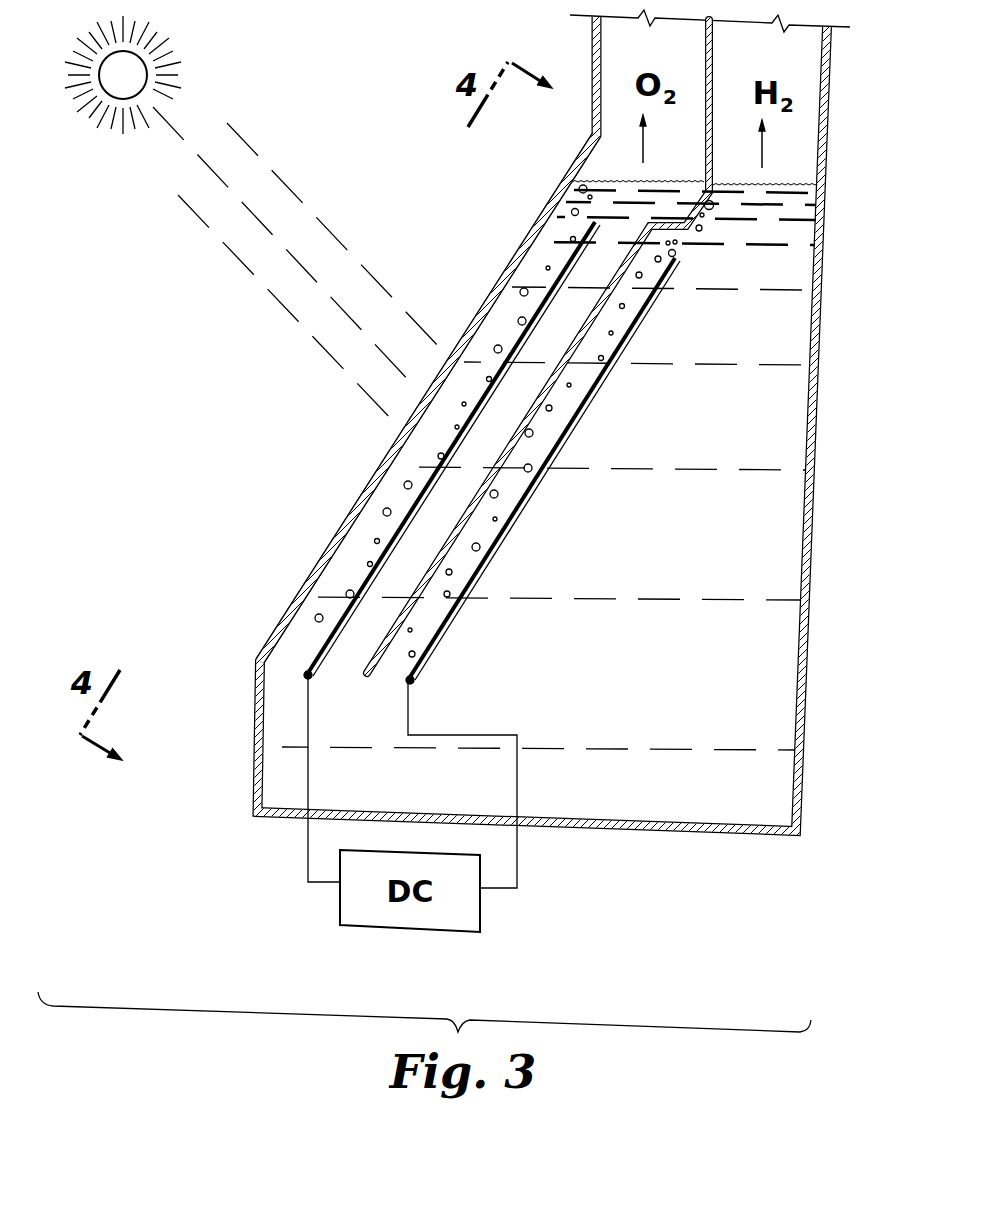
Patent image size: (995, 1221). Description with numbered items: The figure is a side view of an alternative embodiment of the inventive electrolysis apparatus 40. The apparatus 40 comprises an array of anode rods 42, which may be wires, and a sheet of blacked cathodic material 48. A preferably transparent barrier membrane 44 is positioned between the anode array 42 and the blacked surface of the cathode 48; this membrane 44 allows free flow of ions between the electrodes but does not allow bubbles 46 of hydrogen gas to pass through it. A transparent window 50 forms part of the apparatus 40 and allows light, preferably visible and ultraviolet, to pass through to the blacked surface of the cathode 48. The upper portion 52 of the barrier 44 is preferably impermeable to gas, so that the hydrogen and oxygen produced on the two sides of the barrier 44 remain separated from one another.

The inventive apparatus 40 is at (490, 251).
The array of anode rods 42 is at (328, 635).
The barrier membrane 44 is at (373, 675).
The bubbles of H2 gas 46 is at (677, 245).
The sheet of blacked cathodic material 48 is at (435, 640).
The transparent window 50 is at (347, 518).
The upper portion of barrier 52 is at (698, 218).